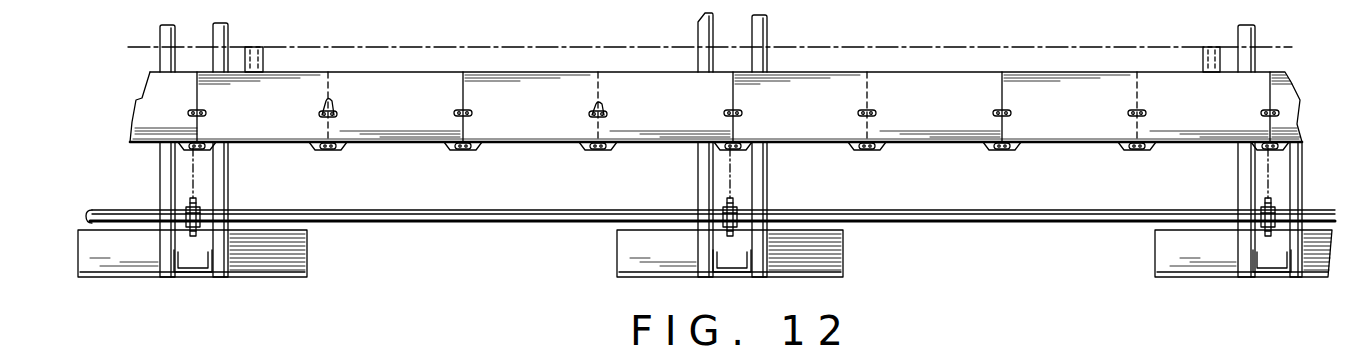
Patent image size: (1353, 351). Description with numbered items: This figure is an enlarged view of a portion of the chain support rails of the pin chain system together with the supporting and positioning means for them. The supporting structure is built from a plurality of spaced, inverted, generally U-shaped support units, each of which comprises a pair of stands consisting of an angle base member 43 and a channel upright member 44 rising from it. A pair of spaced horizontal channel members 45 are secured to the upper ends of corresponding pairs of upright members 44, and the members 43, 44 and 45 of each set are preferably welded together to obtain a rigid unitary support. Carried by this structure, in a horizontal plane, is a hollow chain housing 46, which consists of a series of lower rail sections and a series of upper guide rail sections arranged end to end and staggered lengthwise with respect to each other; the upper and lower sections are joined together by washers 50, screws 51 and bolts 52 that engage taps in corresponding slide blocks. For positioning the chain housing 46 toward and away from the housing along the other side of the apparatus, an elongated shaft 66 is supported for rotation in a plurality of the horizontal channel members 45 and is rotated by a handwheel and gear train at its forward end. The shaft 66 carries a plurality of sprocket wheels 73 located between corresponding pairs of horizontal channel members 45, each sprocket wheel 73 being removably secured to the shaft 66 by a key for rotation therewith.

The angle base member 43 is at (307, 248).
The channel upright member 44 is at (208, 273).
The horizontal channel members 45 is at (160, 178).
The hollow chain housing 46 is at (404, 151).
The washers 50 is at (201, 142).
The screws 51 is at (329, 142).
The bolts 52 is at (328, 107).
The elongated shaft 66 is at (980, 226).
The sprocket wheels 73 is at (203, 211).